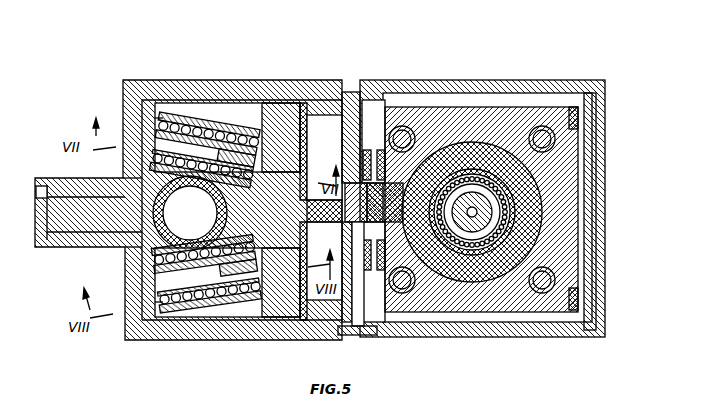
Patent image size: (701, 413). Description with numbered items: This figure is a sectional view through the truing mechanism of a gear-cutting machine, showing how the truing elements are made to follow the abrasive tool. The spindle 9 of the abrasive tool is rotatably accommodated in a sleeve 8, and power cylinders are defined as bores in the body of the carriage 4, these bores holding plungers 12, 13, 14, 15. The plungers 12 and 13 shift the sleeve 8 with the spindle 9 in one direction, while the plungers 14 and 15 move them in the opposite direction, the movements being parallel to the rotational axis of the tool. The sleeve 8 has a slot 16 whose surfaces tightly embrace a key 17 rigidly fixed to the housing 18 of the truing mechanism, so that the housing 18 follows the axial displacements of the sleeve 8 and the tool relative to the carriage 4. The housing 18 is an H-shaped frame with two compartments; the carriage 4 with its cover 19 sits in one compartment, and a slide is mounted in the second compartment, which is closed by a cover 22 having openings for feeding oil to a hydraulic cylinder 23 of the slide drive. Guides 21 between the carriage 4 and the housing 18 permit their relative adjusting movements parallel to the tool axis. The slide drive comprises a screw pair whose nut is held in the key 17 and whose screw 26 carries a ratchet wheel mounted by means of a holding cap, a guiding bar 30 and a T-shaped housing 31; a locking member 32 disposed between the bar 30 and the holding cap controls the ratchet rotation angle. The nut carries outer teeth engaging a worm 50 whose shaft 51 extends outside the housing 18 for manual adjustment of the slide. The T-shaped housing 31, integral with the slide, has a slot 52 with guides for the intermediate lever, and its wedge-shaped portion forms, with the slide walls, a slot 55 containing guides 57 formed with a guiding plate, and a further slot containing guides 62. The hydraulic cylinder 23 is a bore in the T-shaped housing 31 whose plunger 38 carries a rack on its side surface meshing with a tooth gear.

The carriage 4 is at (572, 240).
The sleeve 8 is at (497, 275).
The spindle 9 is at (480, 185).
The plunger 12 is at (545, 130).
The plunger 13 is at (405, 293).
The plunger 14 is at (404, 130).
The plunger 15 is at (543, 293).
The slot 16 is at (385, 250).
The key 17 is at (392, 165).
The housing 18 is at (352, 92).
The cover 19 is at (592, 93).
The guides 21 is at (596, 118).
The cover 22 is at (140, 340).
The hydraulic cylinder 23 is at (118, 236).
The screw 26 is at (324, 250).
The guiding bar 30 is at (303, 250).
The T-shaped housing 31 is at (63, 235).
The locking member 32 is at (142, 262).
The plunger 38 is at (190, 310).
The worm 50 is at (324, 157).
The shaft 51 is at (370, 335).
The slot 52 is at (292, 170).
The slot 55 is at (272, 150).
The guides 57 is at (163, 127).
The guides 62 is at (168, 302).